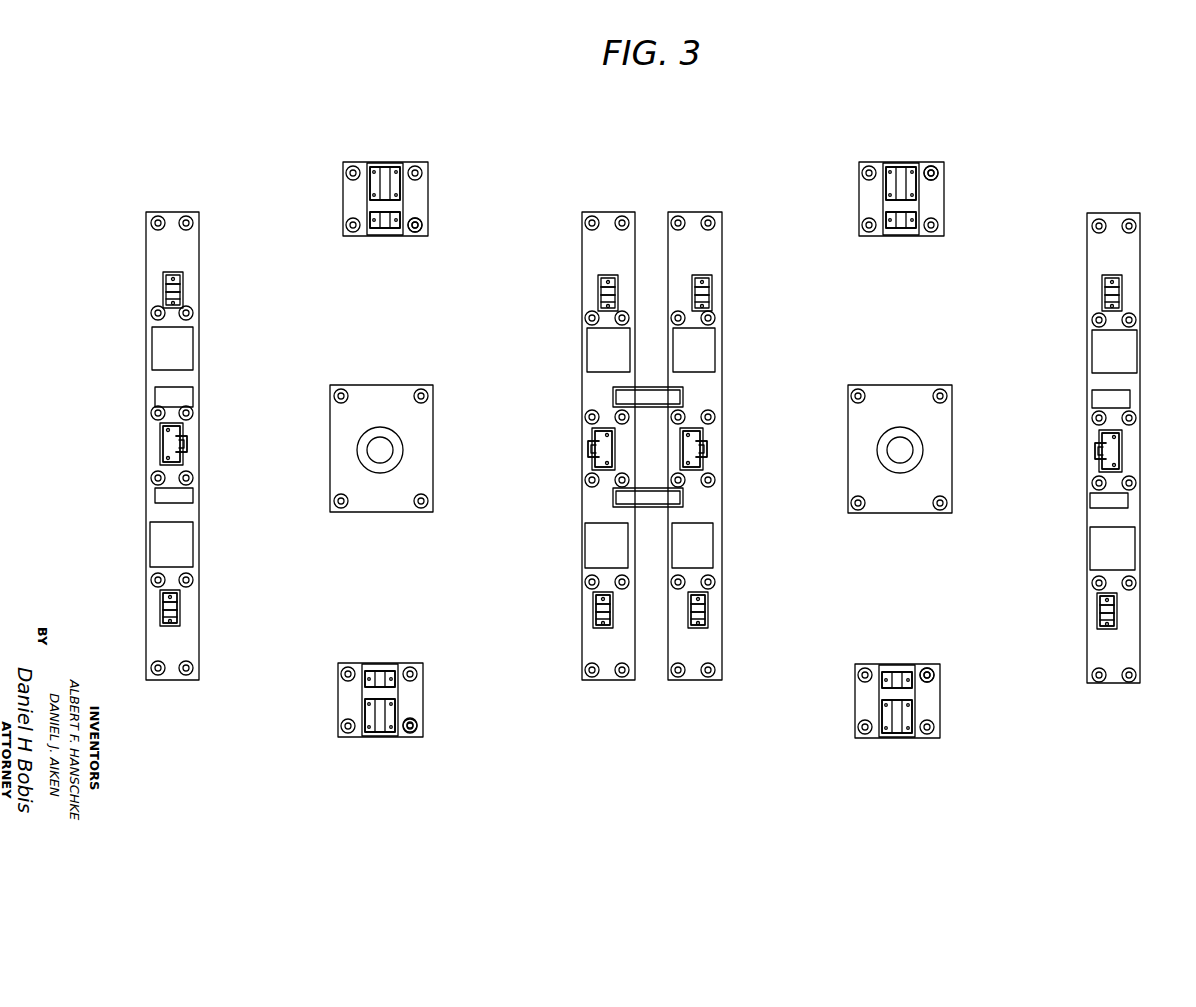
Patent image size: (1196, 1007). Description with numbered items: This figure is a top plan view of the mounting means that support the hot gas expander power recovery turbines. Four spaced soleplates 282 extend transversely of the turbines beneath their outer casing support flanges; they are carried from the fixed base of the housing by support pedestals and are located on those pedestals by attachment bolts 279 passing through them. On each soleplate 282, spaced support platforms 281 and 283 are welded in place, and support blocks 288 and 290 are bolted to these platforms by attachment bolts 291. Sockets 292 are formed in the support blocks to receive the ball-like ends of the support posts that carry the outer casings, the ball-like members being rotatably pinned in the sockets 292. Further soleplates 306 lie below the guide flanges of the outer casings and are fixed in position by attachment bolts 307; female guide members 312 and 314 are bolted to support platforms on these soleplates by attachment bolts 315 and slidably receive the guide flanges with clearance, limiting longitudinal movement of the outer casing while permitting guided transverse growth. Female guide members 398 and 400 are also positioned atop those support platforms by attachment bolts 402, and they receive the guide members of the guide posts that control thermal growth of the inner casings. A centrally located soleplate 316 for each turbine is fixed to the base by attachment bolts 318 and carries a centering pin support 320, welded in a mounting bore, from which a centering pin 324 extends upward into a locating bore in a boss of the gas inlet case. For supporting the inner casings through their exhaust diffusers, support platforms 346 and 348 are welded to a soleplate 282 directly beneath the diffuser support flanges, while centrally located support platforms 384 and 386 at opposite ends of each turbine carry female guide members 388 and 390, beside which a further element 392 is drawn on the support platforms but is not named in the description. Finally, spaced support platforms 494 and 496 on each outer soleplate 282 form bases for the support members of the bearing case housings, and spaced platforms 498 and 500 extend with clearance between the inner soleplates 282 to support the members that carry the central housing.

The attachment bolts 279 is at (154, 216).
The support platform 281 is at (162, 600).
The soleplates 282 is at (199, 510).
The support platform 283 is at (154, 310).
The support block 288 is at (177, 288).
The support block 290 is at (179, 617).
The attachment bolts 291 is at (165, 278).
The sockets 292 is at (164, 294).
The soleplates 306 is at (417, 236).
The attachment bolts 307 is at (423, 222).
The female guide member 312 is at (387, 229).
The female guide member 314 is at (378, 673).
The attachment bolts 315 is at (373, 227).
The centrally located soleplate 316 is at (433, 465).
The attachment bolts 318 is at (417, 507).
The centering pin support 320 is at (403, 441).
The centering pin 324 is at (370, 450).
The support platform 346 is at (152, 355).
The support platform 348 is at (150, 540).
The centrally located support platform 384 is at (589, 460).
The centrally located support platform 386 is at (161, 448).
The female guide member 388 is at (589, 444).
The female guide member 390 is at (188, 445).
The switch contact block 392 is at (161, 458).
The female guide member 398 is at (388, 172).
The female guide member 400 is at (378, 726).
The attachment bolts 402 is at (372, 176).
The support platform 494 is at (194, 395).
The support platform 496 is at (155, 495).
The platform 498 is at (650, 396).
The platform 500 is at (652, 498).